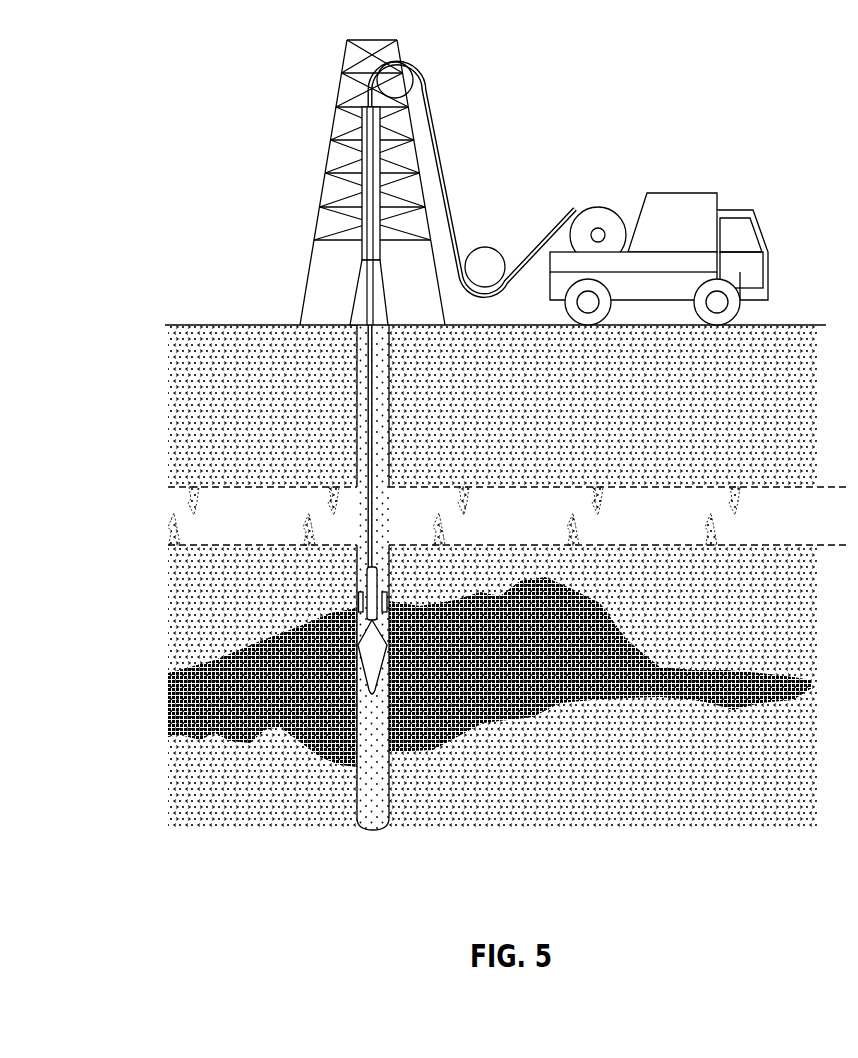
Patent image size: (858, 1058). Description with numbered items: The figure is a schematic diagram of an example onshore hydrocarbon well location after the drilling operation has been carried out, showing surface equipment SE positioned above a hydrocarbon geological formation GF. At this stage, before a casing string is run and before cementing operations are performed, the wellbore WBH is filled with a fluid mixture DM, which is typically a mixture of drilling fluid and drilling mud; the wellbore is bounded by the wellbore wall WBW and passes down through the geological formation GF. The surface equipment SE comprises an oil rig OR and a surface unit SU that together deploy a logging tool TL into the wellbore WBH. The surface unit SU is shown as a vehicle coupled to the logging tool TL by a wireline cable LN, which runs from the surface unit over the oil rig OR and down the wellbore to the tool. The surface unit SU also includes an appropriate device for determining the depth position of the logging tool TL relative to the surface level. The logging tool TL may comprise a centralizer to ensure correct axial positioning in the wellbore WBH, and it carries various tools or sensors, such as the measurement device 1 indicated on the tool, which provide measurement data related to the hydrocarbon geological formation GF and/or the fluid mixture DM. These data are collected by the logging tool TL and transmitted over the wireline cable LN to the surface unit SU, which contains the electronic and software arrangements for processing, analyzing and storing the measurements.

The oil rig OR is at (337, 130).
The surface equipment SE is at (616, 192).
The surface unit SU is at (645, 193).
The wireline cable LN is at (365, 340).
The wellbore WBH is at (240, 564).
The wellbore wall WBW is at (387, 460).
The logging tool TL is at (309, 599).
The measurement device / sensor 1 is at (393, 598).
The hydrocarbon geological formation GF is at (177, 683).
The fluid mixture DM is at (372, 797).